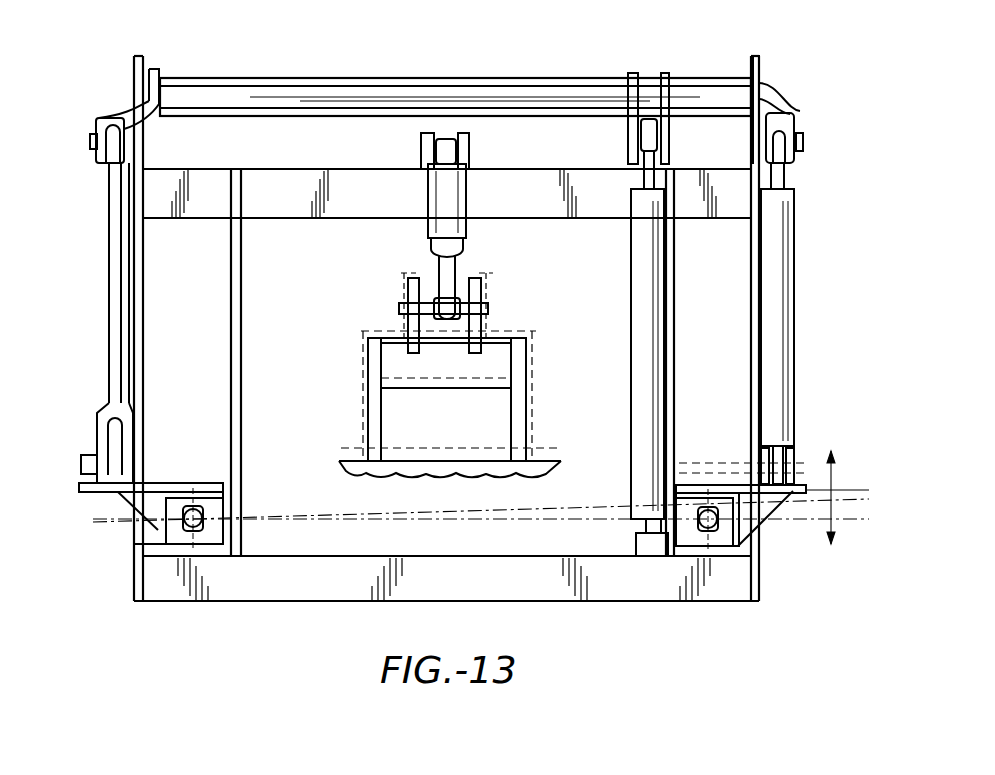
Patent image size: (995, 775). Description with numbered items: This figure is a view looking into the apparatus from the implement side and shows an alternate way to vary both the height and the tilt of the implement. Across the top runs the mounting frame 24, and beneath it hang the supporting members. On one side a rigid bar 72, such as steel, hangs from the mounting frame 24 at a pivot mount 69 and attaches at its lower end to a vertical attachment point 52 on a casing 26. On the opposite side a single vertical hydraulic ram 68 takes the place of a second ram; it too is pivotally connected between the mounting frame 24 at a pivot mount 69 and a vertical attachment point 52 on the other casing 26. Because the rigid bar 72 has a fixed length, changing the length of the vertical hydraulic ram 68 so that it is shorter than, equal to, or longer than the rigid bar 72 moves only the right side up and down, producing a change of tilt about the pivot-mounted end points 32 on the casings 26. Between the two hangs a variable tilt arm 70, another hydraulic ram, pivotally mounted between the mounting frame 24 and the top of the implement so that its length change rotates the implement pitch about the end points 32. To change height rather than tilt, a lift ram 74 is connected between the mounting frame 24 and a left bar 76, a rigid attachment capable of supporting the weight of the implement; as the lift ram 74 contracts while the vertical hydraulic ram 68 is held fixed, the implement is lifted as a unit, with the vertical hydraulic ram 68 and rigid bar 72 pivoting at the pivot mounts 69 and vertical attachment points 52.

The mounting frame 24 is at (688, 78).
The casing 26 is at (158, 528).
The end point 32 is at (201, 512).
The vertical attachment point 52 is at (89, 453).
The vertical hydraulic ram 68 is at (796, 305).
The pivot mount 69 is at (795, 122).
The variable tilt arm 70 is at (463, 228).
The rigid bar 72 is at (109, 256).
The lift ram 74 is at (633, 308).
The left bar 76 is at (628, 592).